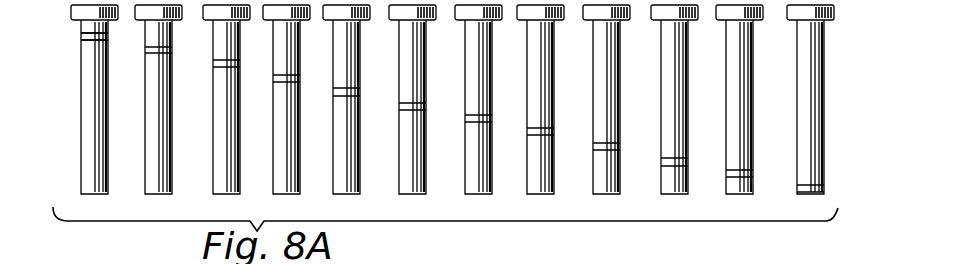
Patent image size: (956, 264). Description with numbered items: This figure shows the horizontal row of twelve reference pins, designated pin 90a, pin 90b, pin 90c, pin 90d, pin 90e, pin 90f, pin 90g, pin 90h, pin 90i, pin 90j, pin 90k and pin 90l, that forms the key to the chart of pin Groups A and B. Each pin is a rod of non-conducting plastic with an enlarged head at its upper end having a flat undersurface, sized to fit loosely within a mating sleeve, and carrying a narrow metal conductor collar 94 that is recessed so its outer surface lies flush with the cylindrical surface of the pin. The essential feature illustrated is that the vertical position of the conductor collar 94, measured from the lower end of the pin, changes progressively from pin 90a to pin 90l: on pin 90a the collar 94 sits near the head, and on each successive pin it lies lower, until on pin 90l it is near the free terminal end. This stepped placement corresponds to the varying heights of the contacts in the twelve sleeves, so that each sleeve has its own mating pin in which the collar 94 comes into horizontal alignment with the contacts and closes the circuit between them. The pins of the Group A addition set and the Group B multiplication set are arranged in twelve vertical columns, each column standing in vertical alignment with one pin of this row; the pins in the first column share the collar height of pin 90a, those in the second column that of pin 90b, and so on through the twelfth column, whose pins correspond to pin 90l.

The conductor collar 94 is at (81, 37).
The pin 90a is at (81, 192).
The pin 90b is at (145, 192).
The pin 90c is at (213, 192).
The pin 90d is at (273, 192).
The pin 90e is at (333, 192).
The pin 90f is at (399, 192).
The pin 90g is at (465, 192).
The pin 90h is at (527, 192).
The pin 90i is at (593, 192).
The pin 90j is at (661, 192).
The pin 90k is at (726, 192).
The pin 90l is at (797, 192).